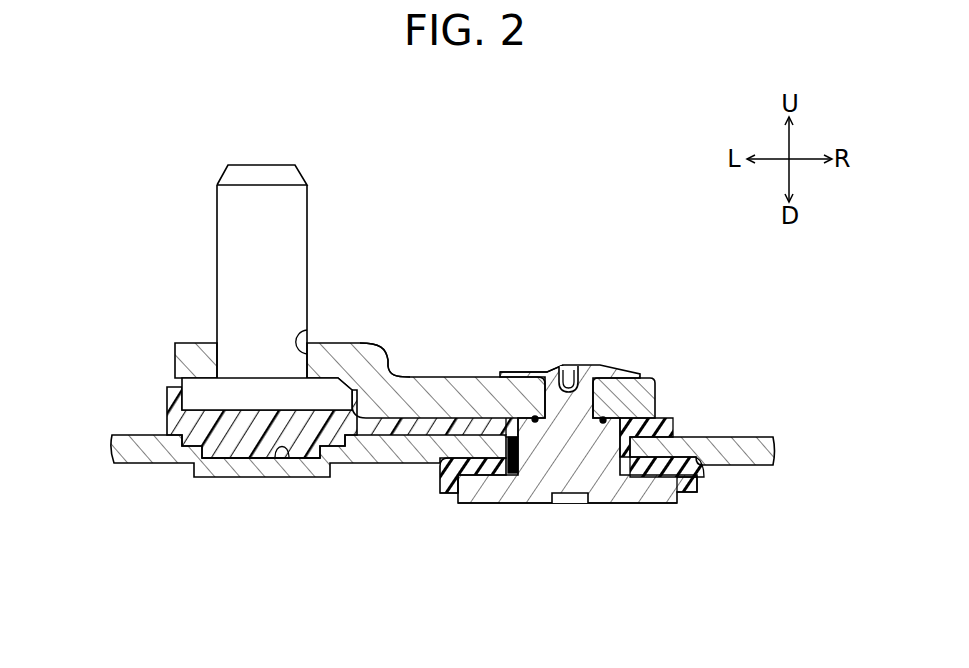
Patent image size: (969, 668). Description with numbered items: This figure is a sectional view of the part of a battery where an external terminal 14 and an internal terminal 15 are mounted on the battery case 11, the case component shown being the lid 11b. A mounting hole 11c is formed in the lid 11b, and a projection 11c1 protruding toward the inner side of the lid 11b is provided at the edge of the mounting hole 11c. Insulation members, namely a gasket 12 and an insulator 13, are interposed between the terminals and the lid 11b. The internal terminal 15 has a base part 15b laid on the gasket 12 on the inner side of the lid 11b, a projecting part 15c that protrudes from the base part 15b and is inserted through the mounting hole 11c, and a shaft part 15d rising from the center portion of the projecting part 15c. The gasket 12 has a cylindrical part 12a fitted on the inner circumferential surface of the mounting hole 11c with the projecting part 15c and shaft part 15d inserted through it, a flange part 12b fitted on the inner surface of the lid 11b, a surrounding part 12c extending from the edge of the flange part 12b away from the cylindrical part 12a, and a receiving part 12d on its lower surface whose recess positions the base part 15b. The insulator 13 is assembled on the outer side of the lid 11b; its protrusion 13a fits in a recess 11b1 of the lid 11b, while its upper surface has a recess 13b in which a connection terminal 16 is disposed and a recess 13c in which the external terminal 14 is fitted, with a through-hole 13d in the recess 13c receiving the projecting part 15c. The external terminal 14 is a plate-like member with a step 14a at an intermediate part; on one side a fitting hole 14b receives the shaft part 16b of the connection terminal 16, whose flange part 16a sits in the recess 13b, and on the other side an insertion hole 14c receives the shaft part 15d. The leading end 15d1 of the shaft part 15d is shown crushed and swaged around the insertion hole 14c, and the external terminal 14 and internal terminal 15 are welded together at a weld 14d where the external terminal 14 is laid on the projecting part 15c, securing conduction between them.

The battery case 11 is at (785, 444).
The lid 11b is at (745, 434).
The recess 11b1 is at (283, 457).
The mounting hole 11c is at (585, 504).
The projection 11c1 is at (604, 421).
The gasket 12 is at (437, 470).
The cylindrical part 12a is at (499, 477).
The flange part 12b is at (704, 477).
The surrounding part 12c is at (443, 494).
The receiving part 12d is at (462, 496).
The insulator 13 is at (158, 416).
The protrusion 13a is at (221, 460).
The recess 13b is at (180, 378).
The recess 13c is at (462, 424).
The through-hole 13d is at (530, 475).
The external terminal 14 is at (424, 358).
The step 14a is at (395, 347).
The fitting hole 14b is at (305, 340).
The insertion hole 14c is at (568, 370).
The weld 14d is at (535, 420).
The internal terminal 15 is at (700, 512).
The base part 15b is at (640, 504).
The projecting part 15c is at (655, 393).
The shaft part 15d is at (546, 367).
The leading end 15d1 is at (610, 370).
The connection terminal 16 is at (291, 158).
The flange part 16a is at (272, 400).
The shaft part 16b is at (217, 250).